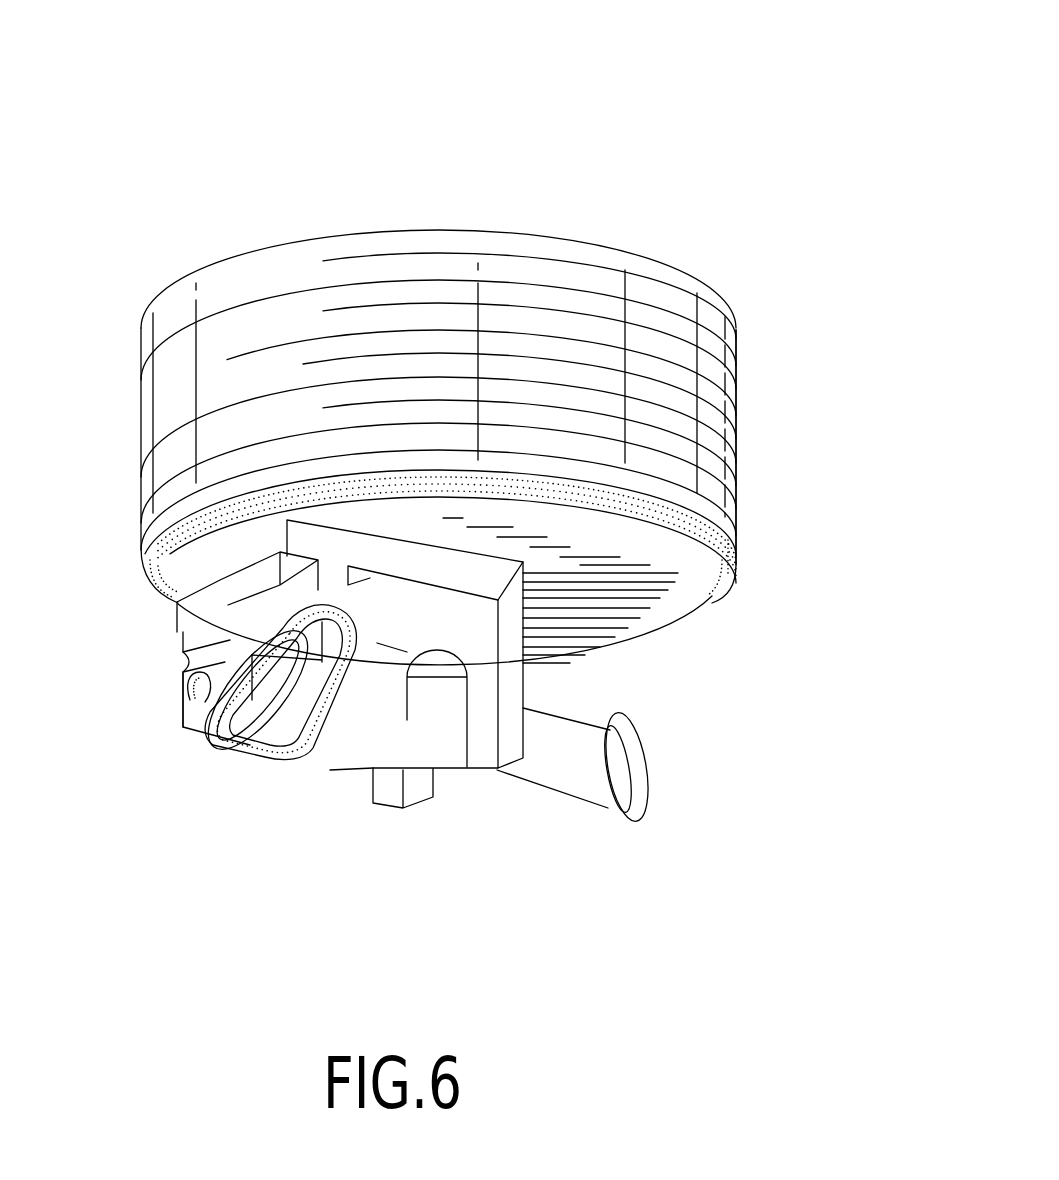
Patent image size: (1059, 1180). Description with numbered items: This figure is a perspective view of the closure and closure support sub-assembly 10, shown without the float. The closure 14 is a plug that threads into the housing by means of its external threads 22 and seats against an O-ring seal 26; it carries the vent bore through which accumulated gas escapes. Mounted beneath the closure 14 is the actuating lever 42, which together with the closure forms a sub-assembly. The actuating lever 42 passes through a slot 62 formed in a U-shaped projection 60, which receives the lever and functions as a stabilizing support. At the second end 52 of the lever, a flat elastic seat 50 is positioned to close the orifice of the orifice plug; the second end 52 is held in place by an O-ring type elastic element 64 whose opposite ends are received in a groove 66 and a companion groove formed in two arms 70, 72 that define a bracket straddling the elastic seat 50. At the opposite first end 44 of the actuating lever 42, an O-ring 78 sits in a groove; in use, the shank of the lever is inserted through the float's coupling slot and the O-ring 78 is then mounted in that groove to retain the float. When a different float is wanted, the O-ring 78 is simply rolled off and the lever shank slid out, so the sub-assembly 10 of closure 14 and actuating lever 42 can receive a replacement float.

The connector assembly 10 is at (611, 133).
The closure 14 is at (282, 369).
The external threads 22 is at (737, 372).
The O-ring seal 26 is at (713, 567).
The actuating lever 42 is at (438, 737).
The first end 44 is at (600, 762).
The elastic seat 50 is at (272, 730).
The second end 52 is at (222, 697).
The U-shaped projection 60 is at (515, 690).
The slot 62 is at (430, 667).
The O-ring type elastic element 64 is at (240, 737).
The groove 66 is at (323, 590).
The arm 70 is at (330, 640).
The arm 72 is at (177, 720).
The O-ring 78 is at (640, 745).